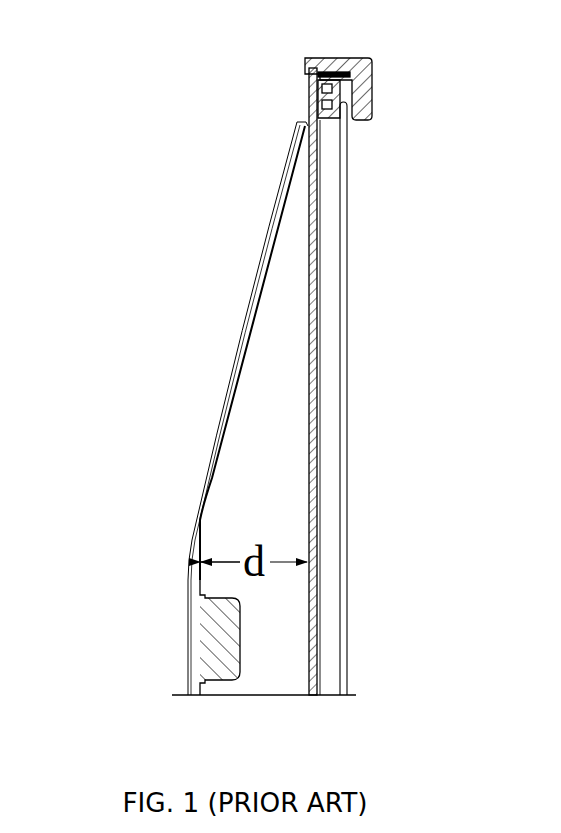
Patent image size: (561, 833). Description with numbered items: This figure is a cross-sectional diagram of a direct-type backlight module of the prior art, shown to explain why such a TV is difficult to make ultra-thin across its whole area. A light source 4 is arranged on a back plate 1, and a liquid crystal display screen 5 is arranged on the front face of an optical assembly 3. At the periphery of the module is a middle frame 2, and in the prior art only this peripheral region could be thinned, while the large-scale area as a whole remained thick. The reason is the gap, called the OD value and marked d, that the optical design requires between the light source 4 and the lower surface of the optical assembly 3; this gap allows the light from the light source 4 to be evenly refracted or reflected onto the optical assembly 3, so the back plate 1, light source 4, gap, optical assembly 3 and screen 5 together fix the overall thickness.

The back plate 1 is at (207, 422).
The middle frame 2 is at (313, 64).
The optical assembly 3 is at (312, 345).
The light source 4 is at (214, 633).
The liquid crystal display (LCD) screen 5 is at (346, 408).